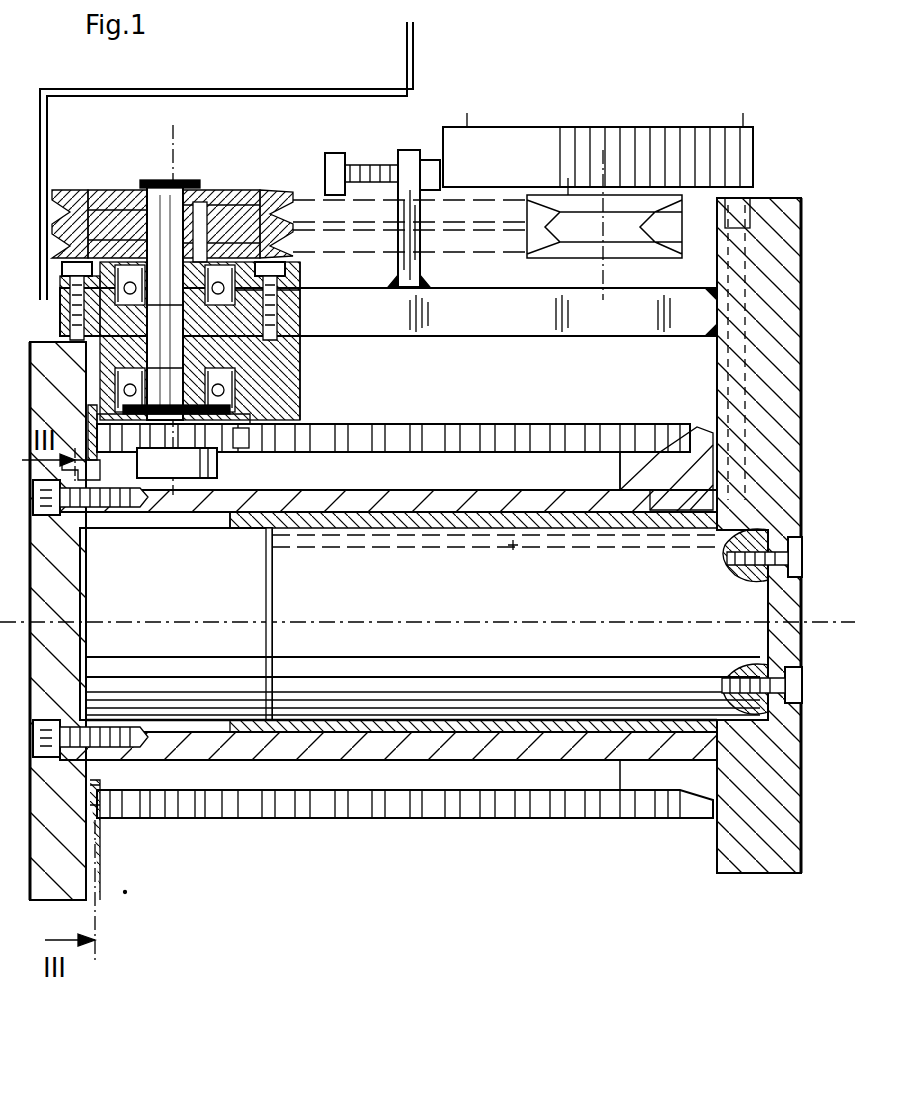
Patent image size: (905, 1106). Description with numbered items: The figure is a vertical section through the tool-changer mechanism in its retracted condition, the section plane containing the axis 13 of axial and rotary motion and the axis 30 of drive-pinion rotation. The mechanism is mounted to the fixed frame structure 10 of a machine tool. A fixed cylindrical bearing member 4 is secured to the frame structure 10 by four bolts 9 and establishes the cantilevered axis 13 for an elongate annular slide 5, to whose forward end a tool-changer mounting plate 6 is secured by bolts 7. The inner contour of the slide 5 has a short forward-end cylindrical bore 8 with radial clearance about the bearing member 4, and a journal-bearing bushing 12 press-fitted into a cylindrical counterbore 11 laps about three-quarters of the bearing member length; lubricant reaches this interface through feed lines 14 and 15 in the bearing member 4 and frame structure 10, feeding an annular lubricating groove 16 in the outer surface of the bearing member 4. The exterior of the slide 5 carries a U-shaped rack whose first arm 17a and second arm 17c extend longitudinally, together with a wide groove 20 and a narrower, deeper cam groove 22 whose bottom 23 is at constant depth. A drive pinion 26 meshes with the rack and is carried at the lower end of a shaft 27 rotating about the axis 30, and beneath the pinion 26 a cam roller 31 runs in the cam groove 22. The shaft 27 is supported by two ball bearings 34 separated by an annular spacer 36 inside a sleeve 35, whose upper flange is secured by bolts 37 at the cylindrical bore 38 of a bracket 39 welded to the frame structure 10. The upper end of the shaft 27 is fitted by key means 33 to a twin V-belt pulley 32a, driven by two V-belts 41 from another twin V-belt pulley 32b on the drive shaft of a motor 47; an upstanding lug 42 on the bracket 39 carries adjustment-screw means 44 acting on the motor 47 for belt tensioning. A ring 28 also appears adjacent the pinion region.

The bearing member 4 is at (176, 624).
The slide 5 is at (686, 476).
The tool-changer mounting plate 6 is at (65, 621).
The bolts 7 is at (95, 715).
The forward-end cylindrical bore 8 is at (212, 725).
The bolts 9 is at (740, 585).
The frame structure 10 is at (778, 215).
The cylindrical counterbore 11 is at (448, 735).
The journal-bearing bushing 12 is at (478, 722).
The axis 13 is at (408, 628).
The lubricant feed line 14 is at (513, 550).
The lubricant feed line 15 is at (735, 396).
The annular lubricating groove 16 is at (275, 593).
The first arm 17a is at (468, 440).
The second arm 17c is at (468, 800).
The groove 20 is at (345, 452).
The cam groove 22 is at (437, 476).
The bottom 23 is at (375, 490).
The drive pinion 26 is at (262, 415).
The shaft 27 is at (185, 210).
The coupling ring 28 is at (300, 415).
The axis 30 is at (165, 133).
The cam roller 31 is at (215, 466).
The twin V-belt pulley 32a is at (292, 200).
The twin V-belt pulley 32b is at (562, 252).
The key means 33 is at (215, 200).
The ball bearings 34 is at (197, 332).
The sleeve 35 is at (228, 342).
The annular spacer 36 is at (242, 322).
The bolts 37 is at (305, 300).
The cylindrical bore 38 is at (175, 338).
The bracket 39 is at (537, 319).
The V-belts 41 is at (75, 225).
The upstanding lug 42 is at (412, 270).
The adjustment-screw means 44 is at (362, 175).
The motor 47 is at (640, 140).